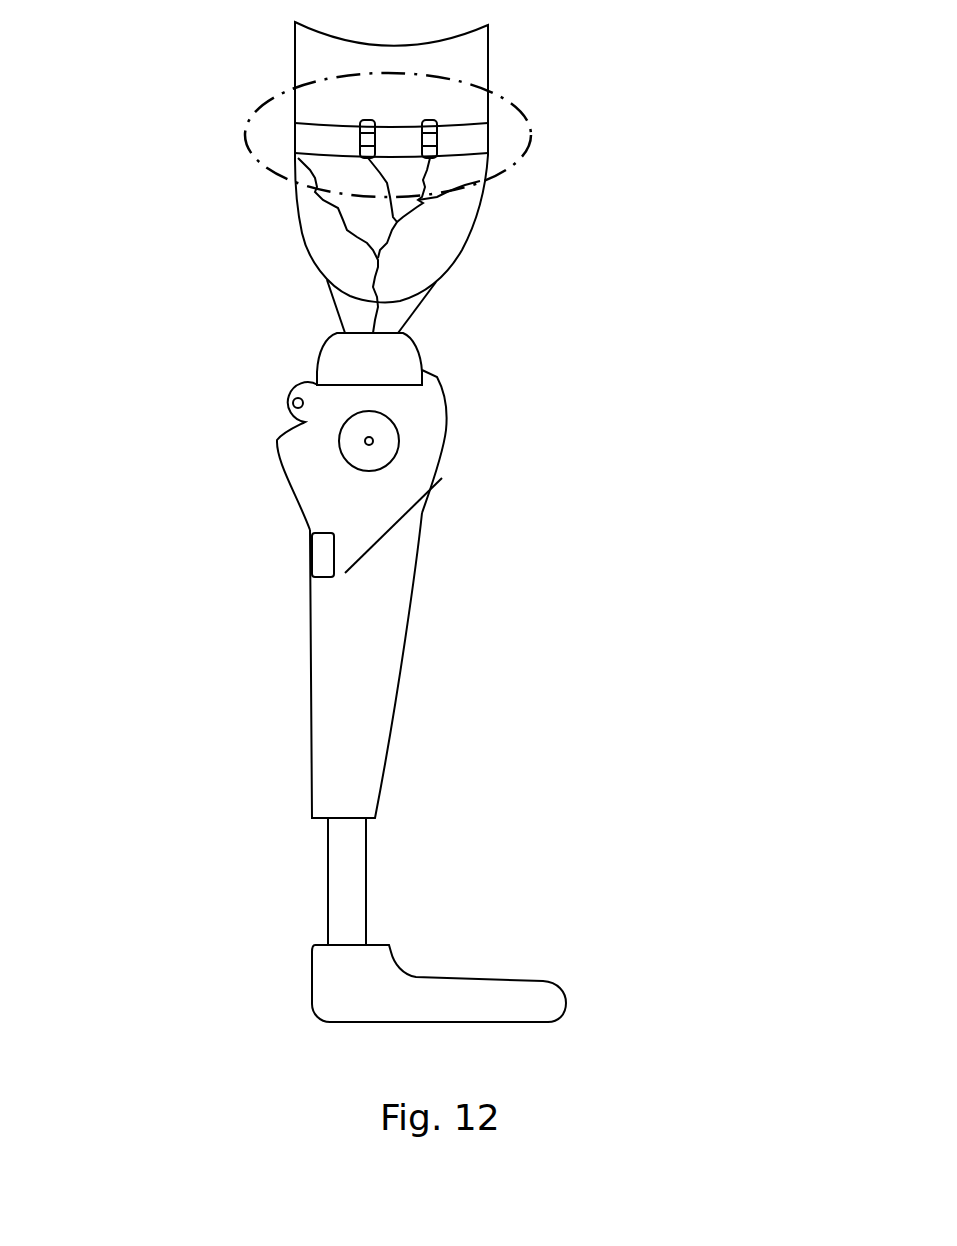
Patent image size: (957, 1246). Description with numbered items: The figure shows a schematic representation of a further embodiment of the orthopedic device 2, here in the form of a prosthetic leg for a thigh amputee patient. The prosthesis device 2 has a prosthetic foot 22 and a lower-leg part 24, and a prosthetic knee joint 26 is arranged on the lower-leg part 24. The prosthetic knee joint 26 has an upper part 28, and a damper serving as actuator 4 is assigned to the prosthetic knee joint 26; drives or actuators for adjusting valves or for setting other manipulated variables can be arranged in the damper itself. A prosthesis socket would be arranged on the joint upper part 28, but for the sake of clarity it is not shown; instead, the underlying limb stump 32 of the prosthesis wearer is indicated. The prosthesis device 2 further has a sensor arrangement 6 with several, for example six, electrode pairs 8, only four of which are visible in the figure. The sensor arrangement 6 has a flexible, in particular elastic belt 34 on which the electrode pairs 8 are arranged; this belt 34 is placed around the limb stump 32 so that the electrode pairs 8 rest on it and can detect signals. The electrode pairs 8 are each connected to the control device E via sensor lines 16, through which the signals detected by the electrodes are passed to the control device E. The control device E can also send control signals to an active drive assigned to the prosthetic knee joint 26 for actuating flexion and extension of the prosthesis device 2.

The orthopedic device 2 is at (610, 504).
The limb stump 32 is at (317, 58).
The belt 34 is at (345, 138).
The electrode pairs 8 is at (432, 124).
The sensor arrangement 6 is at (391, 188).
The sensor lines 16 is at (343, 228).
The upper part 28 is at (365, 362).
The actuator 4 is at (293, 428).
The prosthetic knee joint 26 is at (373, 440).
The lower-leg part 24 is at (362, 701).
The control device E is at (327, 552).
The prosthetic foot 22 is at (398, 995).